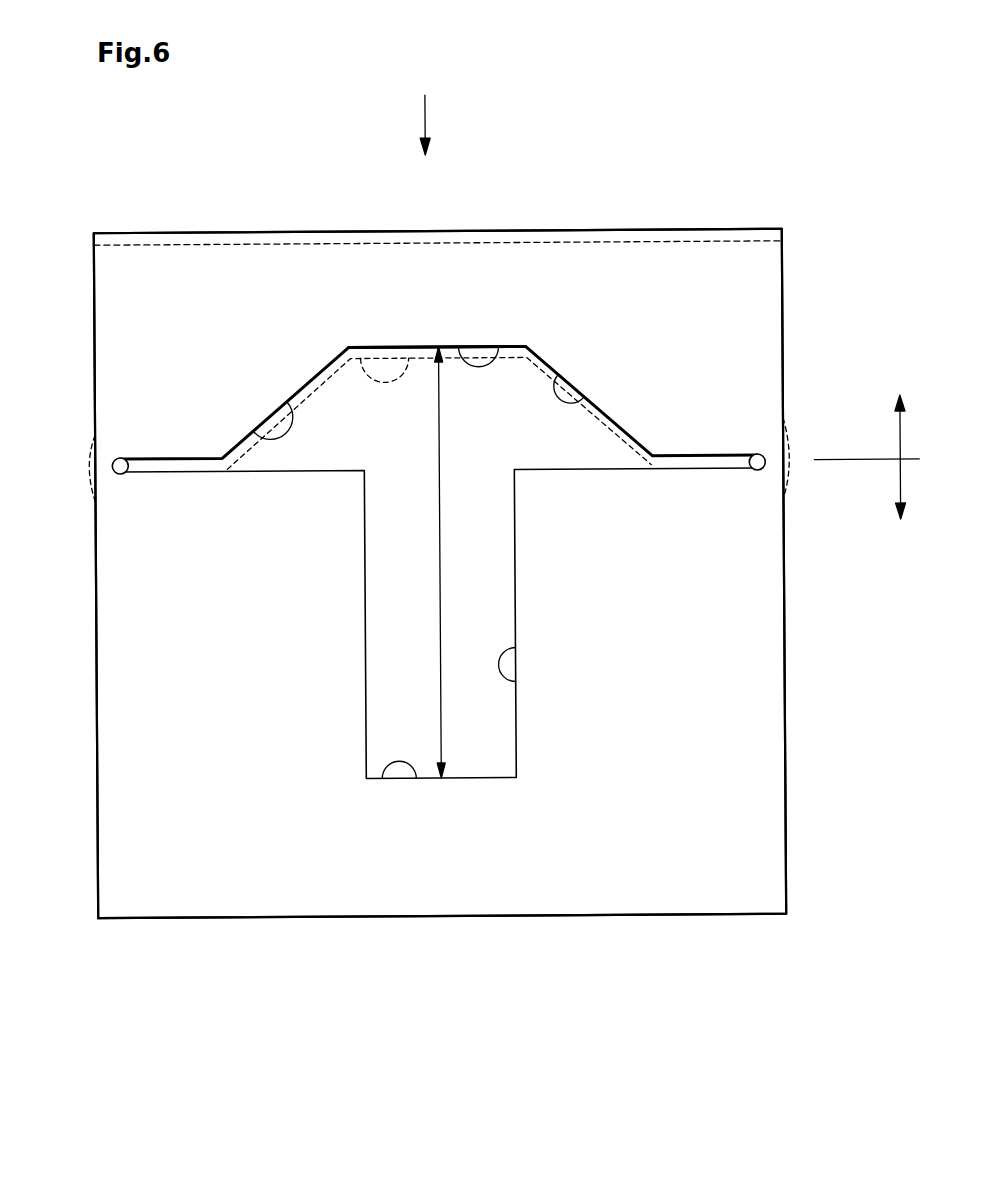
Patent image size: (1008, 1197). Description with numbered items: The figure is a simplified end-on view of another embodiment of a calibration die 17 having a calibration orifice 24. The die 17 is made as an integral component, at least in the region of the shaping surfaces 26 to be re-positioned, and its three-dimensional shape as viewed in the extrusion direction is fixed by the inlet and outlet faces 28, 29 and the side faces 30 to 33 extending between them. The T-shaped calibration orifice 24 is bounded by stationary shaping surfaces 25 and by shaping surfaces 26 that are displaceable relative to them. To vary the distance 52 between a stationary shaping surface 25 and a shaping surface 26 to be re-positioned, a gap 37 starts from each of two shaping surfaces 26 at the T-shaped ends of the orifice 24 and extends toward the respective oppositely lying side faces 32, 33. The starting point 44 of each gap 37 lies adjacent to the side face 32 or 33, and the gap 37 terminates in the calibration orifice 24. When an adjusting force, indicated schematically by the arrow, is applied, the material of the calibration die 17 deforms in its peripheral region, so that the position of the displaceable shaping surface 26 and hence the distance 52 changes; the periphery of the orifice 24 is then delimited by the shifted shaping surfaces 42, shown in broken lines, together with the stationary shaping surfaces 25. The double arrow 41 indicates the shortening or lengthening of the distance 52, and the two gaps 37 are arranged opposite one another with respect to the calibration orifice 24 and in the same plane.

The calibration die 17 is at (712, 890).
The calibration orifice 24 is at (423, 362).
The stationary shaping surface 25 is at (515, 690).
The shaping surface 26 is at (288, 408).
The inlet face 28 is at (703, 857).
The outlet face 29 is at (703, 760).
The side face 30 is at (637, 222).
The side face 31 is at (560, 923).
The side face 32 is at (797, 690).
The side face 33 is at (86, 790).
The gap 37 is at (182, 446).
The double arrow 41 is at (886, 452).
The shifted shaping surface 42 is at (352, 358).
The starting point 44 is at (121, 444).
The distance 52 is at (450, 591).